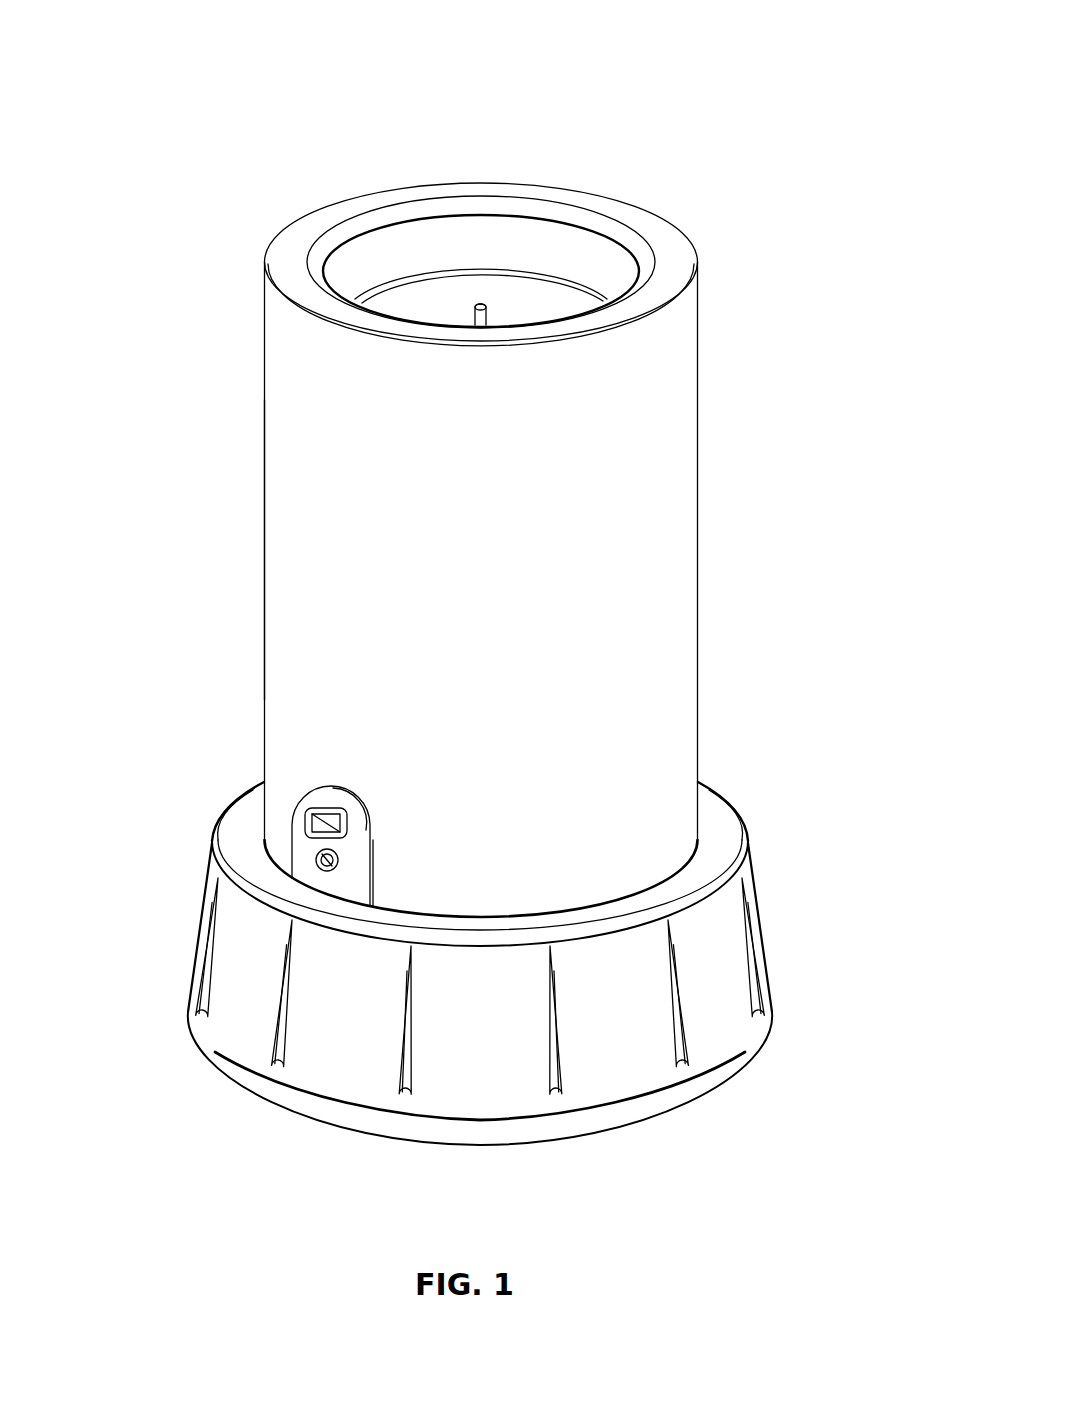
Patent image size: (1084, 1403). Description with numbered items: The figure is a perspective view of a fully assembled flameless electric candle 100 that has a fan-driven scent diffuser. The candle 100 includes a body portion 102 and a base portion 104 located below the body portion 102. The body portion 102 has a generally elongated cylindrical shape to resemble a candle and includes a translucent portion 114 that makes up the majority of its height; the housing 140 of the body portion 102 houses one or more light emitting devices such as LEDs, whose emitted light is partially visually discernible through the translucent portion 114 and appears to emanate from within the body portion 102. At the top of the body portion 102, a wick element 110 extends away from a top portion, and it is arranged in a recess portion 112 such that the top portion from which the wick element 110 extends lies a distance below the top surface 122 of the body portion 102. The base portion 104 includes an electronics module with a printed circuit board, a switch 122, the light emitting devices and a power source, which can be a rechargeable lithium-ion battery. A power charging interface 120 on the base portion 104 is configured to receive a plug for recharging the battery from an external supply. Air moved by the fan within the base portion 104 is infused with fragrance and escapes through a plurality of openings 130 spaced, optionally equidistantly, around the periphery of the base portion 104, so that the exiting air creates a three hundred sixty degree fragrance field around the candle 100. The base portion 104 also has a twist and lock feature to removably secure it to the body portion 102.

The flameless electric candle 100 is at (759, 72).
The body portion 102 is at (697, 540).
The base portion 104 is at (757, 899).
The wick element 110 is at (489, 311).
The recess portion 112 is at (387, 226).
The translucent portion 114 is at (256, 545).
The power charging interface 120 is at (316, 866).
The switch 122 is at (433, 306).
The openings 130 is at (265, 1042).
The housing 140 is at (505, 622).